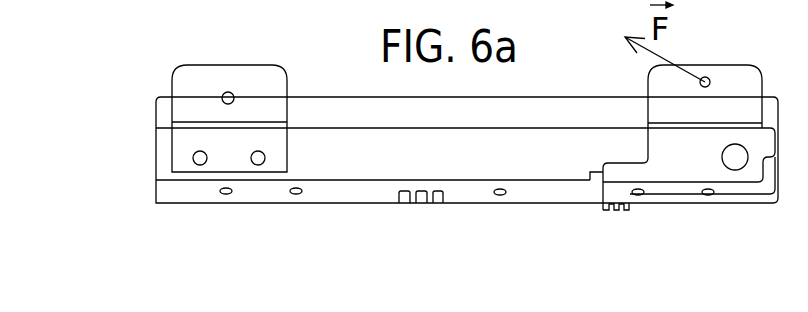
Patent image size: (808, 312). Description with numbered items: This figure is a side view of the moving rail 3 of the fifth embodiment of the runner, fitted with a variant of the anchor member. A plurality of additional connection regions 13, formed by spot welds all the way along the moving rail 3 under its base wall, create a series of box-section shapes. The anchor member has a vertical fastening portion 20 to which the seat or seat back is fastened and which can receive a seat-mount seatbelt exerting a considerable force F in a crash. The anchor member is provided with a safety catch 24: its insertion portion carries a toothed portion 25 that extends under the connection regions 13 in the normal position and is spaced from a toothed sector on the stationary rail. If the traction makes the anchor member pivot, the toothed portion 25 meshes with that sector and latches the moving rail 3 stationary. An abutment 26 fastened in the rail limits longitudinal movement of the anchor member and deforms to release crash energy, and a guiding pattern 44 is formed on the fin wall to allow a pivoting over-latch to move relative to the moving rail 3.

The moving rail 3 is at (133, 156).
The additional connection regions 13 is at (226, 196).
The fastening portion 20 is at (730, 88).
The safety catch 24 is at (618, 210).
The toothed portion 25 is at (603, 205).
The abutment 26 is at (590, 175).
The guiding pattern 44 is at (737, 160).